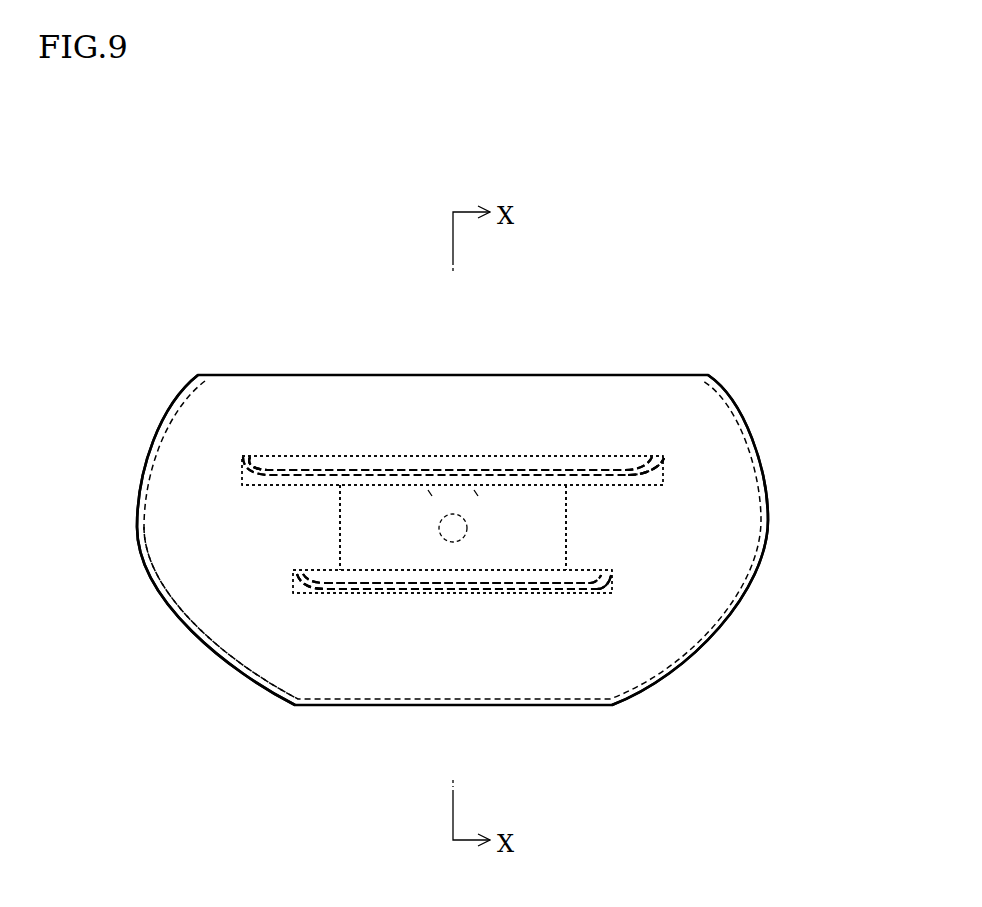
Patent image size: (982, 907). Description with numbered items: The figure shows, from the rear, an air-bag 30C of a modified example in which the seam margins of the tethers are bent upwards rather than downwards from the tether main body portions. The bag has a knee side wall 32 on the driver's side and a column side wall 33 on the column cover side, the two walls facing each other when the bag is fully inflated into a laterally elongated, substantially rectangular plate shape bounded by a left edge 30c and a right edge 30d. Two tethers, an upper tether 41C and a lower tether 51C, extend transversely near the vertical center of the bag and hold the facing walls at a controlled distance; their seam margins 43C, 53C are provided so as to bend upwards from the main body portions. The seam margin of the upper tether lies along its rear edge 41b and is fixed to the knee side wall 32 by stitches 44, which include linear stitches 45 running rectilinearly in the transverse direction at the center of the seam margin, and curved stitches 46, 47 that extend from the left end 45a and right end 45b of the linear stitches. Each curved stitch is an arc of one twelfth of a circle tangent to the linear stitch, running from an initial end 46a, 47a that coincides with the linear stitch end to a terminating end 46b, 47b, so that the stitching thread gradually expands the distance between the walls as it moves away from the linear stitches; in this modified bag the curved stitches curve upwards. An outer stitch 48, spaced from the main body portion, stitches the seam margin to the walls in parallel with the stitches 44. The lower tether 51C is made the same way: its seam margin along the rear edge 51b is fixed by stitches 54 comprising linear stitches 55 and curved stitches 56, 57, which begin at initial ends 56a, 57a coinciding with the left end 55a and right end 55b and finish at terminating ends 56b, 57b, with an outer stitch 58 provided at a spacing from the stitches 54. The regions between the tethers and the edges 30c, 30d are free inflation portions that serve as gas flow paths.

The air-bag 30C is at (182, 316).
The left edge 30c is at (140, 553).
The right edge 30d is at (750, 590).
The knee side wall 32 is at (247, 628).
The column side wall 33 is at (275, 643).
The rear edge 41b is at (368, 460).
The tether 41C is at (659, 493).
The seam margin 43C is at (512, 466).
The stitches 44 is at (401, 464).
The linear stitches 45 is at (401, 464).
The left end 45a is at (279, 461).
The right end 45b is at (628, 470).
The curved stitch 46 is at (262, 456).
The initial end 46a is at (279, 461).
The terminating end 46b is at (245, 447).
The curved stitch 47 is at (645, 456).
The initial end 47a is at (628, 470).
The terminating end 47b is at (657, 447).
The outer stitch 48 is at (523, 474).
The rear edge 51b is at (360, 598).
The tether 51C is at (591, 603).
The seam margin 53C is at (528, 577).
The stitches 54 is at (455, 592).
The linear stitches 55 is at (455, 592).
The left end 55a is at (336, 585).
The right end 55b is at (575, 584).
The curved stitch 56 is at (308, 586).
The initial end 56a is at (330, 584).
The terminating end 56b is at (288, 573).
The curved stitch 57 is at (602, 594).
The initial end 57a is at (575, 584).
The terminating end 57b is at (620, 568).
The outer stitch 58 is at (393, 597).